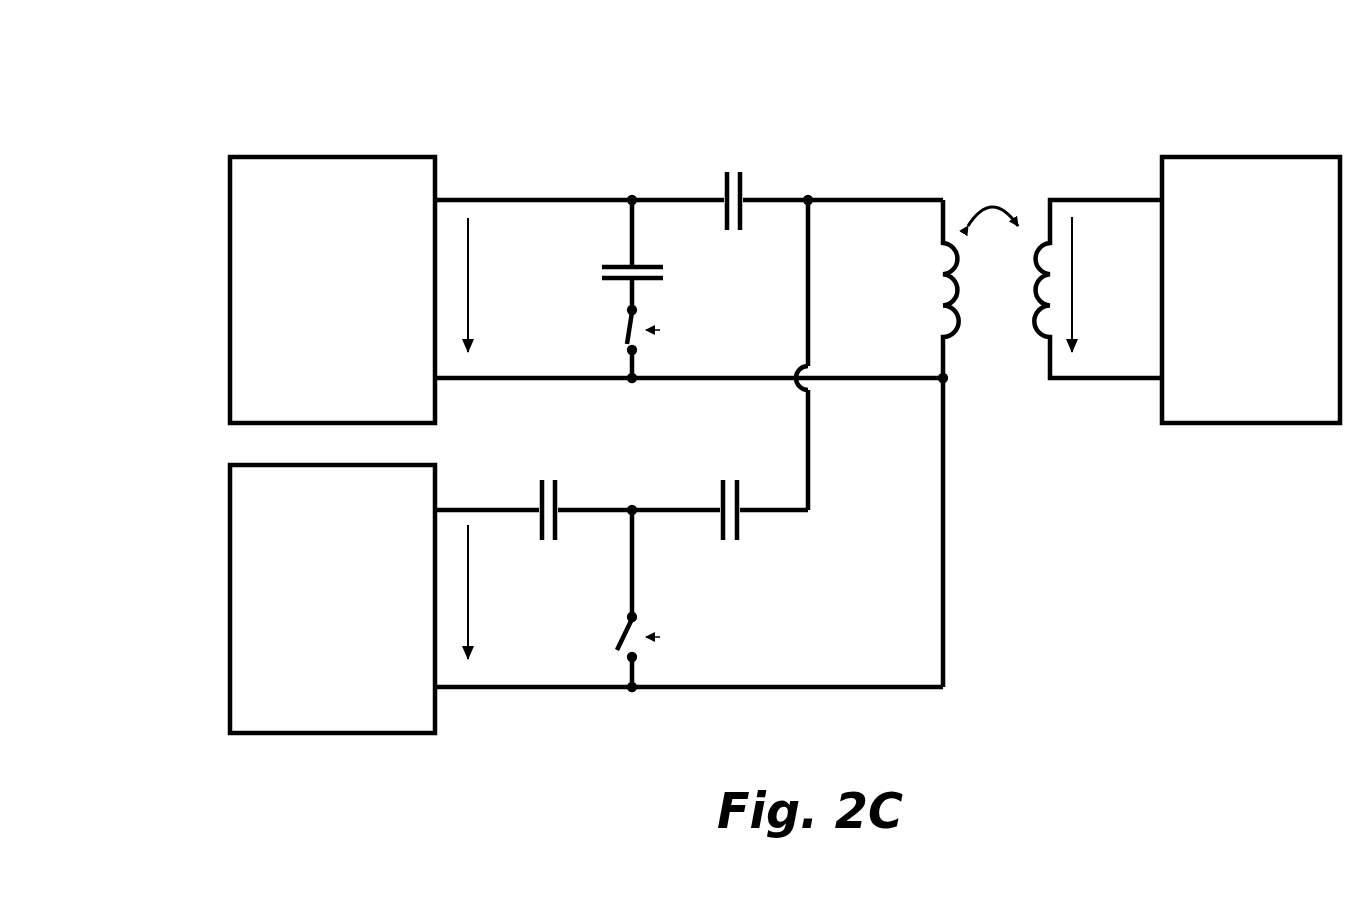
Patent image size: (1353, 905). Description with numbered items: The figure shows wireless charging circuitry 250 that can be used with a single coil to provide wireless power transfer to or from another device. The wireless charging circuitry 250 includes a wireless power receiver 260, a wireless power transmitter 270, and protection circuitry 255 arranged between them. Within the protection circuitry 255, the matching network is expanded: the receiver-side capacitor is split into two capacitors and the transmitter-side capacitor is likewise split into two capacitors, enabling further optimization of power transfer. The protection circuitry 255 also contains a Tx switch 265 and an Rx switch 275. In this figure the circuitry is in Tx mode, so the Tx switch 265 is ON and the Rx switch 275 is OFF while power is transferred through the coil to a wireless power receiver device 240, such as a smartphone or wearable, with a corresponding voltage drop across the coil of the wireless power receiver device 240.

The wireless power receiver (WPR) device 240 is at (1247, 156).
The wireless charging circuitry 250 is at (200, 117).
The protection circuitry 255 is at (845, 126).
The wireless power receiver 260 is at (230, 282).
The Tx switch 265 is at (628, 330).
The wireless power transmitter 270 is at (230, 617).
The Rx switch 275 is at (617, 645).